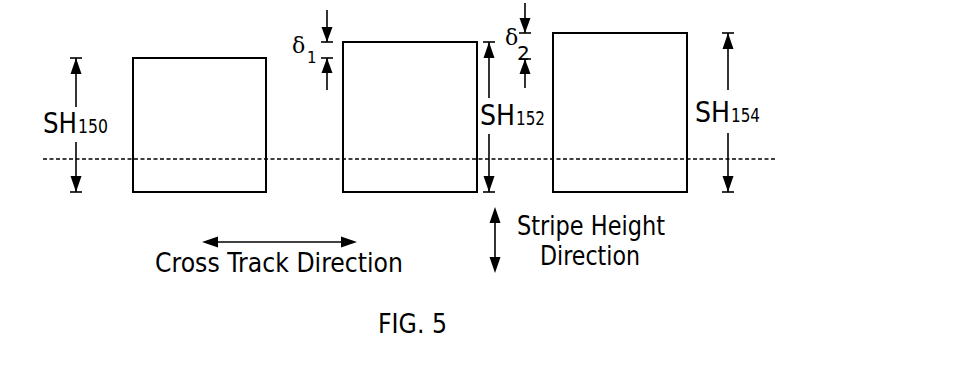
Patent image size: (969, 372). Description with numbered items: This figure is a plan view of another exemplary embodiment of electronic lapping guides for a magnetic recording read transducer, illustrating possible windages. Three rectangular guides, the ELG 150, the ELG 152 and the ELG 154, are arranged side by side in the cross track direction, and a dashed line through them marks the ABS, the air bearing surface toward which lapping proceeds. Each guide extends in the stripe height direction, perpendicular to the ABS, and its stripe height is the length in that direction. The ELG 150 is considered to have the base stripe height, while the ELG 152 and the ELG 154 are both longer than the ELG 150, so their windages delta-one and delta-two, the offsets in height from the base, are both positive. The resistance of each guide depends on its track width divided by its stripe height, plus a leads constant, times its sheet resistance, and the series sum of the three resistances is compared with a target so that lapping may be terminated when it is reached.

The ELG 150 is at (199, 125).
The ELG 152 is at (410, 117).
The ELG 154 is at (620, 112).
The air bearing surface ABS is at (749, 184).